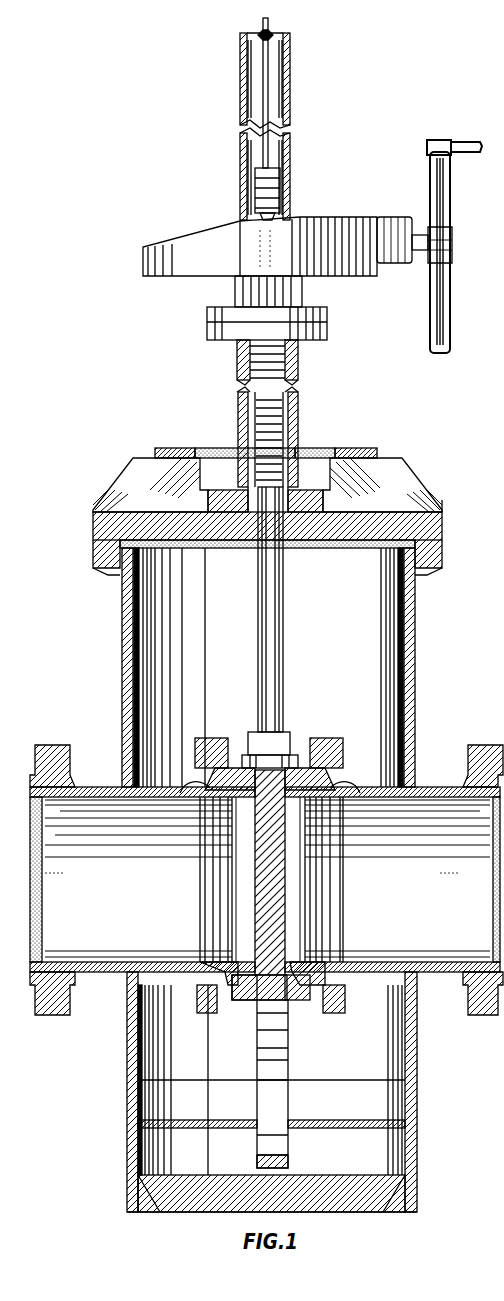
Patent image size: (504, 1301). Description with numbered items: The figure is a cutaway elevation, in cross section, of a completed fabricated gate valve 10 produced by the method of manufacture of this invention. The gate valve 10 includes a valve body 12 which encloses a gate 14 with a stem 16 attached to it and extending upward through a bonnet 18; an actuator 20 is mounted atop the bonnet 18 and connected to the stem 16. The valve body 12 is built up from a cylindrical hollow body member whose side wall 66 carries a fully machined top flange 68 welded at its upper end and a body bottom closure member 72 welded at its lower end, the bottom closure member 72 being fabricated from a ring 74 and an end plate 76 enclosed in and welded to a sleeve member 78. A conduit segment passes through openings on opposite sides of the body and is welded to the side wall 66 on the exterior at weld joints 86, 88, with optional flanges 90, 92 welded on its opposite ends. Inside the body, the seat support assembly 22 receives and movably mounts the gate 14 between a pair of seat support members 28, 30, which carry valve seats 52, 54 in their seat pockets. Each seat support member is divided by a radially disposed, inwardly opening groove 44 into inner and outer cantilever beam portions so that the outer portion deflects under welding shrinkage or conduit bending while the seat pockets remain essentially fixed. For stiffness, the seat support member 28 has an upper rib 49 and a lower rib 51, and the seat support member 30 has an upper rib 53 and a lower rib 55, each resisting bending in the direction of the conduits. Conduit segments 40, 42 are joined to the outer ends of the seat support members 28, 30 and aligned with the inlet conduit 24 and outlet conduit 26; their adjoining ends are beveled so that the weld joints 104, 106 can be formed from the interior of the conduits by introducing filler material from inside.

The gate valve 10 is at (158, 73).
The valve body 12 is at (452, 490).
The gate 14 is at (288, 1058).
The stem 16 is at (283, 601).
The bonnet 18 is at (358, 462).
The actuator 20 is at (312, 232).
The seat support assembly 22 is at (305, 712).
The inlet conduit 24 is at (118, 890).
The outlet conduit 26 is at (426, 890).
The seat support member 28 is at (250, 1005).
The seat support member 30 is at (330, 965).
The conduit segment 40 is at (200, 792).
The conduit segment 42 is at (345, 792).
The groove 44 is at (228, 890).
The upper rib 49 is at (210, 738).
The lower rib 51 is at (190, 1010).
The valve seat 52 is at (248, 942).
The upper rib 53 is at (328, 738).
The valve seat 54 is at (310, 950).
The lower rib 55 is at (340, 1012).
The side wall 66 is at (415, 661).
The top flange 68 is at (97, 568).
The body bottom closure member 72 is at (417, 1098).
The ring 74 is at (138, 1131).
The end plate 76 is at (358, 1200).
The sleeve member 78 is at (127, 1183).
The weld joint 86 is at (120, 782).
The weld joint 88 is at (460, 760).
The flange 90 is at (52, 1020).
The flange 92 is at (480, 1018).
The weld joint 104 is at (200, 830).
The weld joint 106 is at (338, 885).